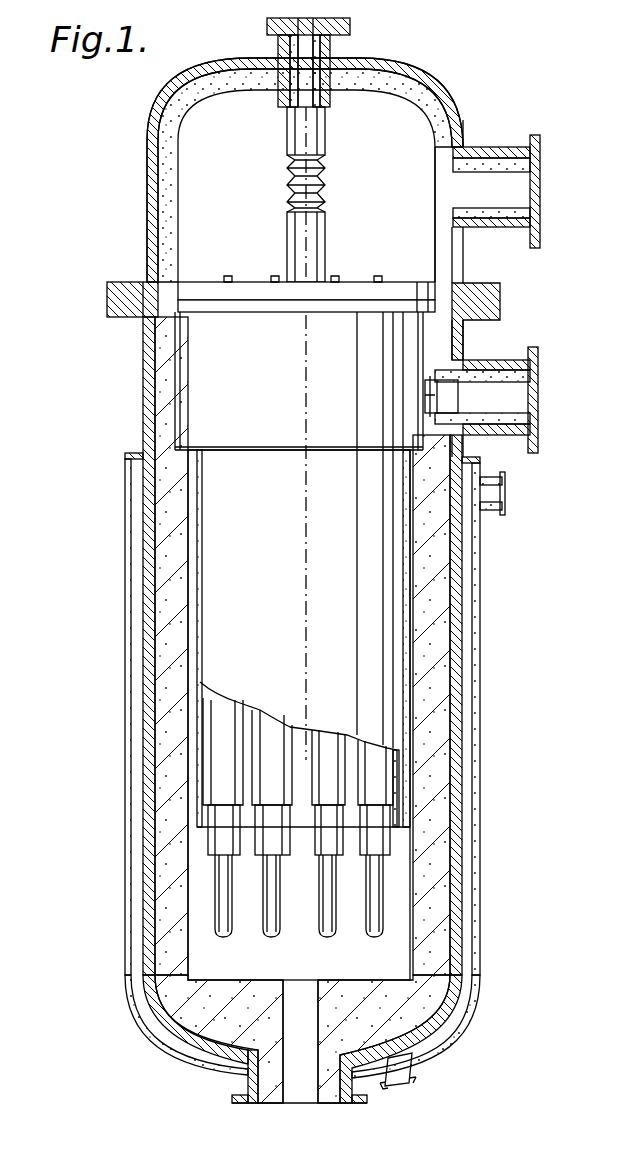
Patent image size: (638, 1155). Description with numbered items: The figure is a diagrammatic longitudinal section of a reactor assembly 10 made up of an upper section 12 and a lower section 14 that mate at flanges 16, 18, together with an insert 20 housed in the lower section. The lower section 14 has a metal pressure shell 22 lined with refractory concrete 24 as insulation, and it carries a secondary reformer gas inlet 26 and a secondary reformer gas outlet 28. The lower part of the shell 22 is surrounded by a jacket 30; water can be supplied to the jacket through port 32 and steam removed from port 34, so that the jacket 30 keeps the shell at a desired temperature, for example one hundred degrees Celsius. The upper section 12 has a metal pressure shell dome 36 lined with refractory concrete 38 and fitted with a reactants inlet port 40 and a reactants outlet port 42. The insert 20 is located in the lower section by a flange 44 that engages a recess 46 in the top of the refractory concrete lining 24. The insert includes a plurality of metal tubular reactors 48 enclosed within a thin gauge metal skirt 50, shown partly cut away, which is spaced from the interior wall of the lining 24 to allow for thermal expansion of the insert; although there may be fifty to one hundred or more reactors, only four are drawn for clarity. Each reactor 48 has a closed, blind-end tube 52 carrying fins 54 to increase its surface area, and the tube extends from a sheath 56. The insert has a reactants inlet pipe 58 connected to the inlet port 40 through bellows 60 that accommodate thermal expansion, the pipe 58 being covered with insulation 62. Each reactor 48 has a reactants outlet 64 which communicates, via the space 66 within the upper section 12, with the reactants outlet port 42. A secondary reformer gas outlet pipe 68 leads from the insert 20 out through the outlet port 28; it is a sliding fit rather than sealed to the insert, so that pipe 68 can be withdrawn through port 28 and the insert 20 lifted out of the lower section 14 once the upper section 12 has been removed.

The assembly 10 is at (462, 85).
The upper section 12 is at (146, 124).
The lower section 14 is at (140, 393).
The flange 16 is at (482, 284).
The flange 18 is at (484, 321).
The insert 20 is at (283, 414).
The metal pressure shell 22 is at (144, 358).
The refractory concrete 24 is at (162, 492).
The secondary reformer gas inlet 26 is at (290, 1100).
The secondary reformer gas outlet 28 is at (536, 378).
The jacket 30 is at (481, 553).
The port 32 is at (408, 1082).
The port 34 is at (506, 494).
The metal pressure shell dome 36 is at (433, 88).
The refractory concrete 38 is at (385, 88).
The reactants inlet port 40 is at (270, 28).
The reactants outlet port 42 is at (541, 190).
The flange 44 is at (417, 298).
The recess 46 is at (150, 300).
The tubular reactor 48 is at (302, 918).
The metal skirt 50 is at (203, 747).
The tube 52 is at (217, 898).
The fins 54 is at (208, 838).
The sheath 56 is at (206, 780).
The reactants inlet pipe 58 is at (320, 100).
The bellows 60 is at (328, 180).
The insulation 62 is at (292, 100).
The reactants outlet 64 is at (240, 262).
The space 66 is at (243, 187).
The secondary reformer gas outlet pipe 68 is at (425, 383).